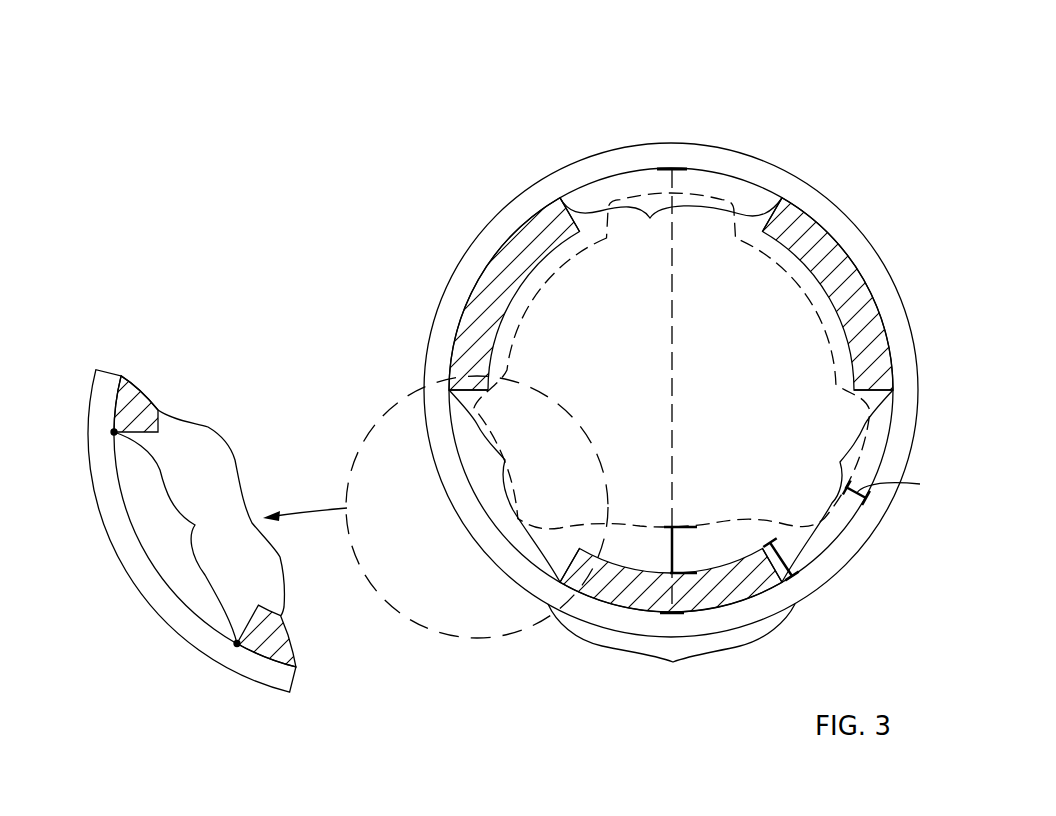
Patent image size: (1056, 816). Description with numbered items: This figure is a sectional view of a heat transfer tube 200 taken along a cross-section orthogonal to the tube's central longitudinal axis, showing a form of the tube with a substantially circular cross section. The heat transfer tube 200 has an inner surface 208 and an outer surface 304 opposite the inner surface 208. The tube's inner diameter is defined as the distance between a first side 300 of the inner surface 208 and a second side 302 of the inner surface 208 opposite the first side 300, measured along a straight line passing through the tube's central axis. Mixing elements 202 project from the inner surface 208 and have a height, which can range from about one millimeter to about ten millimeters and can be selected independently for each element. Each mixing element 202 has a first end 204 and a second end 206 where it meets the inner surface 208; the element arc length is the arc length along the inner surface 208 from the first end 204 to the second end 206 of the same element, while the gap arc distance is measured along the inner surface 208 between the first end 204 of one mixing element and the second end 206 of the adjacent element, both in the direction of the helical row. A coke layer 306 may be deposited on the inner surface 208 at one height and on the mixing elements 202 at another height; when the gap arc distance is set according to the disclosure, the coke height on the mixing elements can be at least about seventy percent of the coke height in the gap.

The heat transfer tube 200 is at (942, 108).
The mixing element 202 is at (862, 300).
The first end of mixing element 204 is at (768, 219).
The second end of mixing element 206 is at (584, 213).
The inner surface 208 is at (657, 168).
The first side of inner surface 300 is at (683, 168).
The second side of inner surface 302 is at (676, 613).
The outer surface 304 is at (520, 197).
The coke layer 306 is at (860, 398).